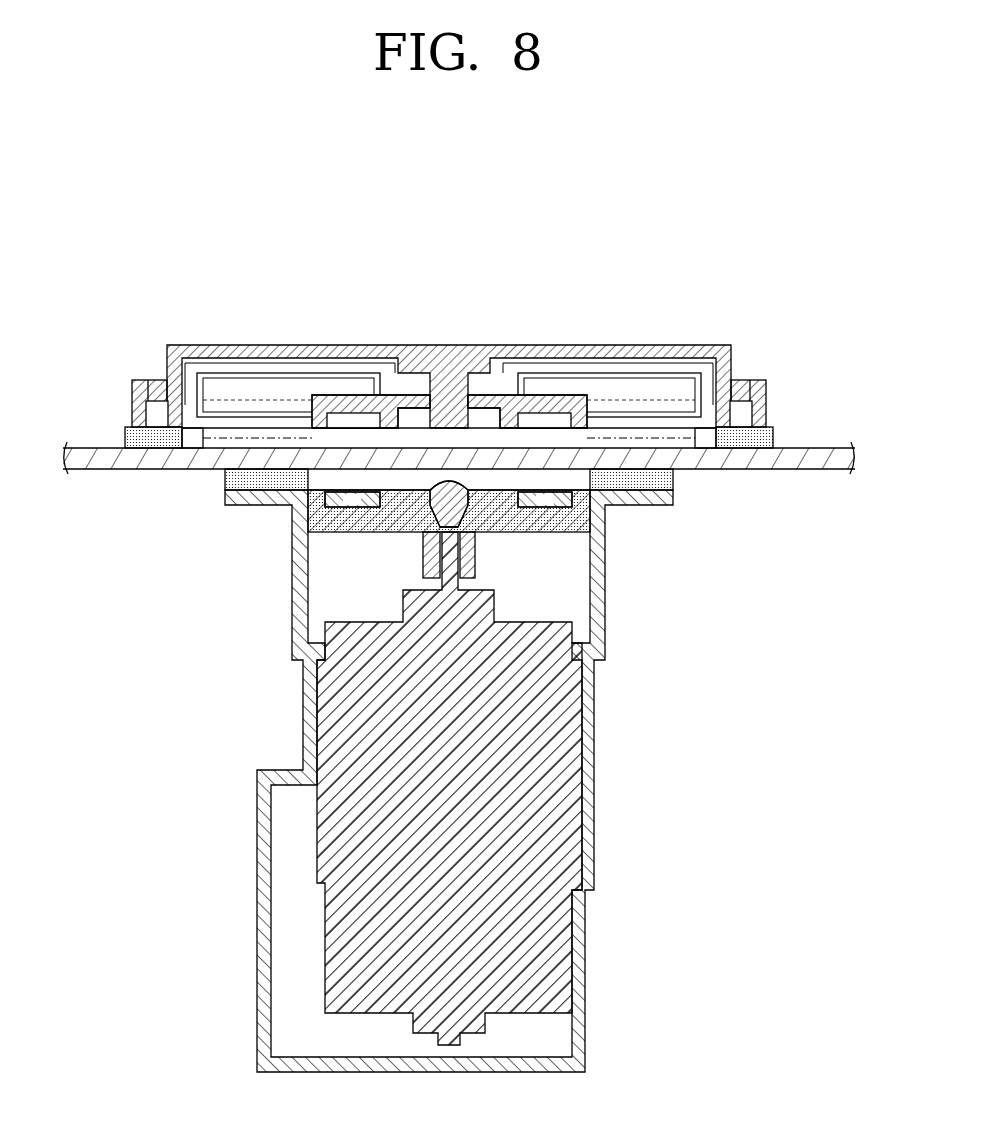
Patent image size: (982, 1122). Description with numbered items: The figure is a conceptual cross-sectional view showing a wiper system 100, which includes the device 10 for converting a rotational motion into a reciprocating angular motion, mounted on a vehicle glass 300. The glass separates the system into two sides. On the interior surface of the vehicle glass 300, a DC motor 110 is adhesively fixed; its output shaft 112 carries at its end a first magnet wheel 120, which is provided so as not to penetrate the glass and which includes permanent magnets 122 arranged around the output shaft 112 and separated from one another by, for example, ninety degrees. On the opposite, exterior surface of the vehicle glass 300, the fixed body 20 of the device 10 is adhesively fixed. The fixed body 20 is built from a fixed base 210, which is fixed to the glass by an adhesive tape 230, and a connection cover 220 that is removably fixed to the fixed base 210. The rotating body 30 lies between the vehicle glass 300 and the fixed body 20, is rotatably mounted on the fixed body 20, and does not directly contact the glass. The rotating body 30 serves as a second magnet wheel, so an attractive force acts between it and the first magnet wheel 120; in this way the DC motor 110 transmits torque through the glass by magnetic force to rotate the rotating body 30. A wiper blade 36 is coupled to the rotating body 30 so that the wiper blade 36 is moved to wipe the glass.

The device for converting a rotational motion into a reciprocating angular motion 10 is at (449, 410).
The fixed body 20 is at (678, 340).
The rotating body 30 is at (304, 442).
The wiper blade 36 is at (215, 435).
The wiper system 100 is at (412, 770).
The DC motor 110 is at (592, 735).
The output shaft 112 is at (452, 565).
The first magnet wheel 120 is at (506, 532).
The permanent magnet 122 is at (353, 509).
The fixed base 210 is at (132, 406).
The connection cover 220 is at (217, 344).
The adhesive tape 230 is at (748, 449).
The vehicle glass 300 is at (833, 447).